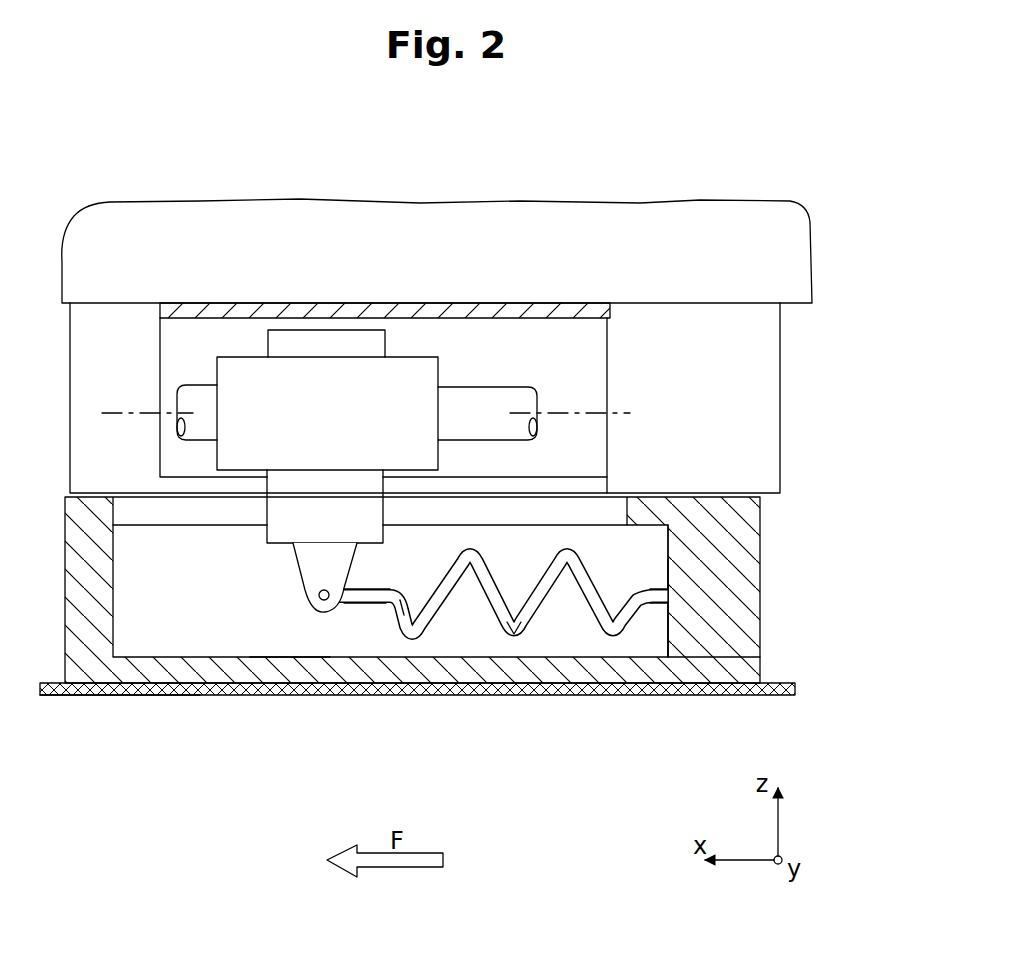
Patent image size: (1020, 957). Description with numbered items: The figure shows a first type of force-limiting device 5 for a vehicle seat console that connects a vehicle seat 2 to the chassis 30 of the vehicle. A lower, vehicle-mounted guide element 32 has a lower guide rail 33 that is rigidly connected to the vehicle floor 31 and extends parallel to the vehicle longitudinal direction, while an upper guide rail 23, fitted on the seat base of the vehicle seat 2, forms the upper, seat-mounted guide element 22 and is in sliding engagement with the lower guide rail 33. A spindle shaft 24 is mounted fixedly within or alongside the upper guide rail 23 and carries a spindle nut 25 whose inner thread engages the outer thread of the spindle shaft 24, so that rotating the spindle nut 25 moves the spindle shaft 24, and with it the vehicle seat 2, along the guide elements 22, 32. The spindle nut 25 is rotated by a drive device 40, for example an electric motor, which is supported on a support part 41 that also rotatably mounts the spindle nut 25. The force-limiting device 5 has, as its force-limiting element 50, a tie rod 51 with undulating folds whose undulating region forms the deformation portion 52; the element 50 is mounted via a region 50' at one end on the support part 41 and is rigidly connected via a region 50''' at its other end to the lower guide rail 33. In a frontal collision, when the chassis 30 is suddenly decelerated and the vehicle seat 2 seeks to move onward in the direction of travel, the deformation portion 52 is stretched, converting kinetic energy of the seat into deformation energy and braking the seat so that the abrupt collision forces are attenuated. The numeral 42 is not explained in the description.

The vehicle seat 2 is at (740, 241).
The upper, seat-mounted guide element 22 is at (790, 422).
The upper guide rail 23 is at (765, 352).
The spindle shaft 24 is at (487, 388).
The spindle nut 25 is at (402, 375).
The gap 42 is at (240, 333).
The drive device 40 is at (320, 493).
The support part 41 is at (303, 560).
The lower, vehicle-mounted guide element 32 is at (768, 522).
The lower guide rail 33 is at (744, 645).
The force-limiting device 5 is at (287, 642).
The force-limiting element 50 is at (361, 671).
The region at one end of the force-limiting element 50' is at (297, 605).
The region at the other end of the force-limiting element 50''' is at (746, 576).
The tie rod 51 is at (517, 635).
The deformation portion 52 is at (643, 612).
The vehicle floor 31 is at (793, 684).
The chassis 30 is at (85, 700).